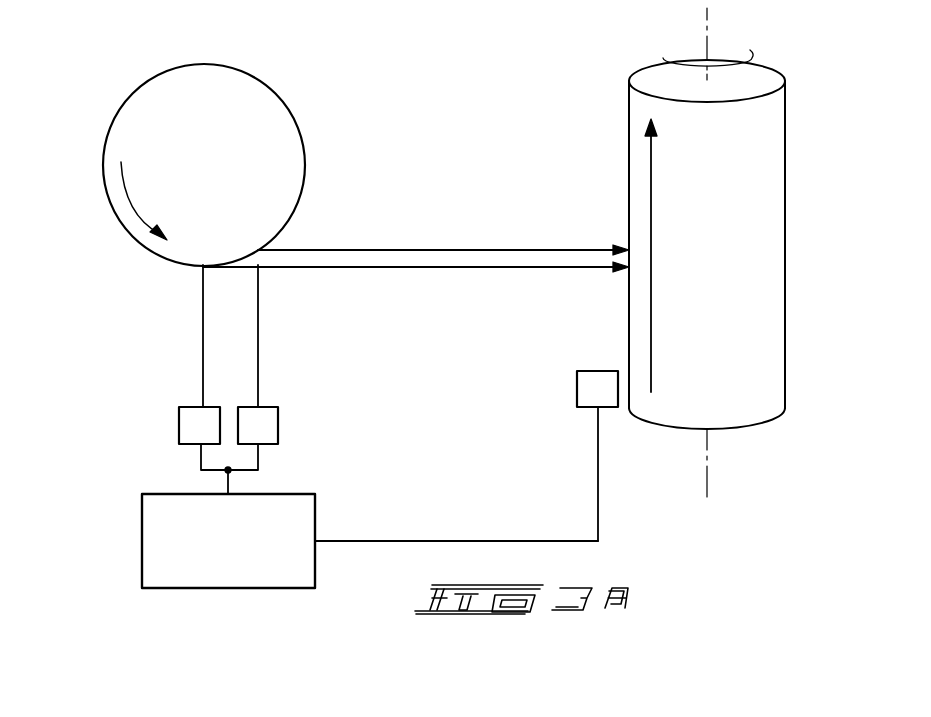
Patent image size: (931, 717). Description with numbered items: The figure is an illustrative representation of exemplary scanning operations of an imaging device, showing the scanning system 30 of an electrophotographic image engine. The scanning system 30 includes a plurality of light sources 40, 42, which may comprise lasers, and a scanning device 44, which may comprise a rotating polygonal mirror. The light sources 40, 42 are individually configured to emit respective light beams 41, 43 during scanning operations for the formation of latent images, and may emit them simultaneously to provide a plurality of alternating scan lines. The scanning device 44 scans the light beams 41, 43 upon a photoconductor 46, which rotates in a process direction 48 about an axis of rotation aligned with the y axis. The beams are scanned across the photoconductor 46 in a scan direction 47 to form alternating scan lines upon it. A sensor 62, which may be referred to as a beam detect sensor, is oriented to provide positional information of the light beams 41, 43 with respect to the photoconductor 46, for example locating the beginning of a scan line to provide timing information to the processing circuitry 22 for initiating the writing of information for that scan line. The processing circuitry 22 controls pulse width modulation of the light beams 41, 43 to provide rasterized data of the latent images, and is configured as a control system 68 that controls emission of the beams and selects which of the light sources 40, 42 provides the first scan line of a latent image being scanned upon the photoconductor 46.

The scanning system 30 is at (104, 86).
The scanning device 44 is at (238, 68).
The light beam 41 is at (203, 341).
The light beam 43 is at (258, 310).
The light source 40 is at (179, 426).
The light source 42 is at (278, 425).
The processing circuitry 22 is at (225, 588).
The control system 68 is at (122, 562).
The sensor 62 is at (577, 388).
The photoconductor 46 is at (785, 315).
The scan direction 47 is at (651, 208).
The process direction 48 is at (680, 48).